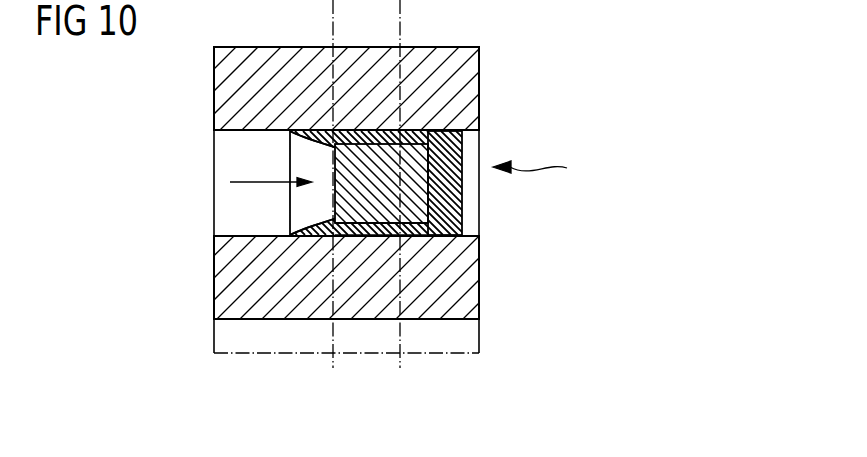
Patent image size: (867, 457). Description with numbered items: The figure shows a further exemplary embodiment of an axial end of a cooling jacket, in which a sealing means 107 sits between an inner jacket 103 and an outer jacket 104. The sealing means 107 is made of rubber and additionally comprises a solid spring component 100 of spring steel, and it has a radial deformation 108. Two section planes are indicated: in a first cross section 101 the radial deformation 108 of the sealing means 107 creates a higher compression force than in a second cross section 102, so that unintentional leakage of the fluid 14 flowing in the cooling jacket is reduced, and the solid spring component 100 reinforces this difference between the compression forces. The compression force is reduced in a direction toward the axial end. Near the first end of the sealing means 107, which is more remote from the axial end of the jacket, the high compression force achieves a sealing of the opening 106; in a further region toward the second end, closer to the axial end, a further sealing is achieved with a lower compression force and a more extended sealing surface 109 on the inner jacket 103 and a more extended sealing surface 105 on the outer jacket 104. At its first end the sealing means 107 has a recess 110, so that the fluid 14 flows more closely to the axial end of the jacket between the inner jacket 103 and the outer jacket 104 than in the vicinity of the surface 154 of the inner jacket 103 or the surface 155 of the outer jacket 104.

The solid spring component 100 is at (407, 135).
The first cross section 101 is at (333, 364).
The second cross section 102 is at (400, 364).
The inner jacket 103 is at (221, 272).
The outer jacket 104 is at (221, 78).
The sealing surface 105 is at (452, 142).
The opening 106 is at (551, 170).
The sealing means 107 is at (447, 192).
The radial deformation 108 is at (320, 133).
The sealing surface 109 is at (445, 227).
The recess 110 is at (358, 183).
The fluid 14 is at (230, 182).
The surface of the inner jacket 154 is at (293, 218).
The surface of the outer jacket 155 is at (293, 146).